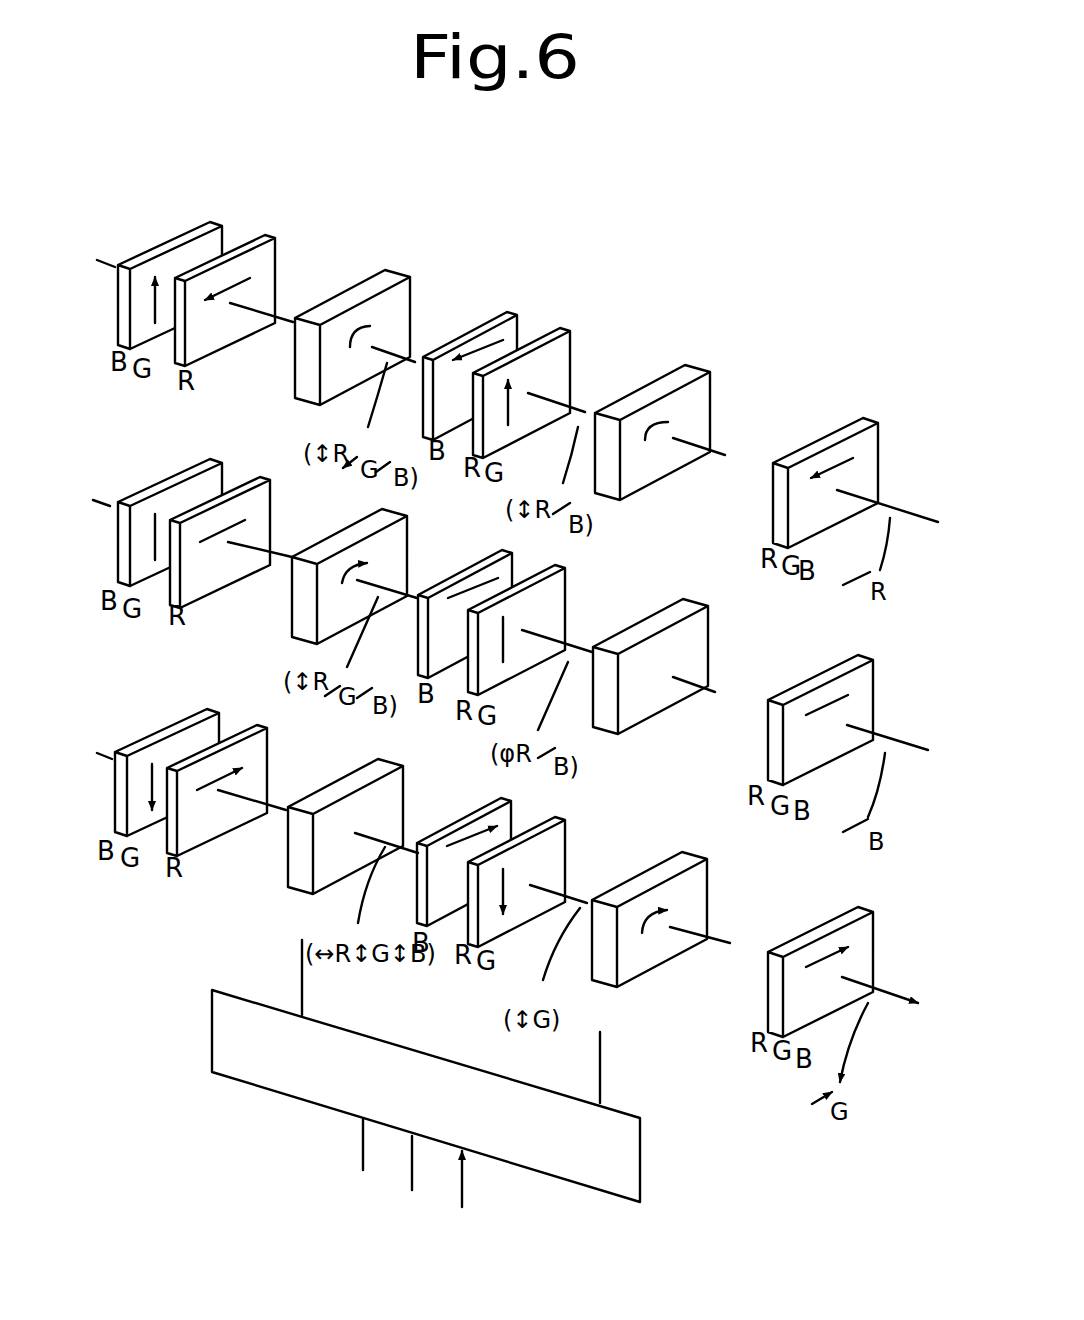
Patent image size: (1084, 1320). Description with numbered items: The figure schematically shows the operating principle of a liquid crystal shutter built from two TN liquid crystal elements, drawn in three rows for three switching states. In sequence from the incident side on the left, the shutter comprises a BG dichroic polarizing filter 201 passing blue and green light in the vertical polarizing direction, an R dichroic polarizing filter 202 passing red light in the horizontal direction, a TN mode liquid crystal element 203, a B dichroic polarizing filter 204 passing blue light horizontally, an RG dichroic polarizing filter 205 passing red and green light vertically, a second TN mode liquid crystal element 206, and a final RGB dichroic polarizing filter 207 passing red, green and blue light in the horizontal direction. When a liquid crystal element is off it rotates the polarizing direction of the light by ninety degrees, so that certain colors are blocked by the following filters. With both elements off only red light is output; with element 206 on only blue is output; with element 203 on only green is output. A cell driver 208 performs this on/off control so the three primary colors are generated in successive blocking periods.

The BG dichroic polarizing filter 201 is at (193, 712).
The R dichroic polarizing filter 202 is at (267, 730).
The TN mode liquid crystal element 203 is at (405, 770).
The B dichroic polarizing filter 204 is at (515, 800).
The RG dichroic polarizing filter 205 is at (570, 843).
The TN mode liquid crystal element 206 is at (712, 883).
The RGB dichroic polarizing filter 207 is at (878, 930).
The cell driver 208 is at (578, 1183).